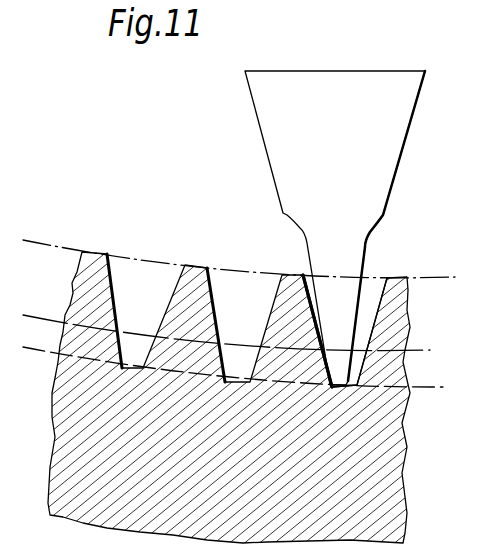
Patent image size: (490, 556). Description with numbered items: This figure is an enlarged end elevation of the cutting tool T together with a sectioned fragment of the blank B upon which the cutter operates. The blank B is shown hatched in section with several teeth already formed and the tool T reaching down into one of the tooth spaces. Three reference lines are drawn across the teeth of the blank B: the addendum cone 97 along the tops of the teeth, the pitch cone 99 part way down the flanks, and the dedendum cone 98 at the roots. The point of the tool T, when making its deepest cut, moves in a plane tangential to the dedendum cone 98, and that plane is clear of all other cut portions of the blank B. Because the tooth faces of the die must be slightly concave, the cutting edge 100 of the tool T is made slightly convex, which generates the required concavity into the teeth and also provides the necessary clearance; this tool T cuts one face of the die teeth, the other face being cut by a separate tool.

The addendum cone 97 is at (145, 265).
The dedendum cone 98 is at (185, 372).
The pitch cone 99 is at (138, 337).
The cutting edge 100 is at (318, 313).
The cutting tool T is at (390, 153).
The blank B is at (363, 458).